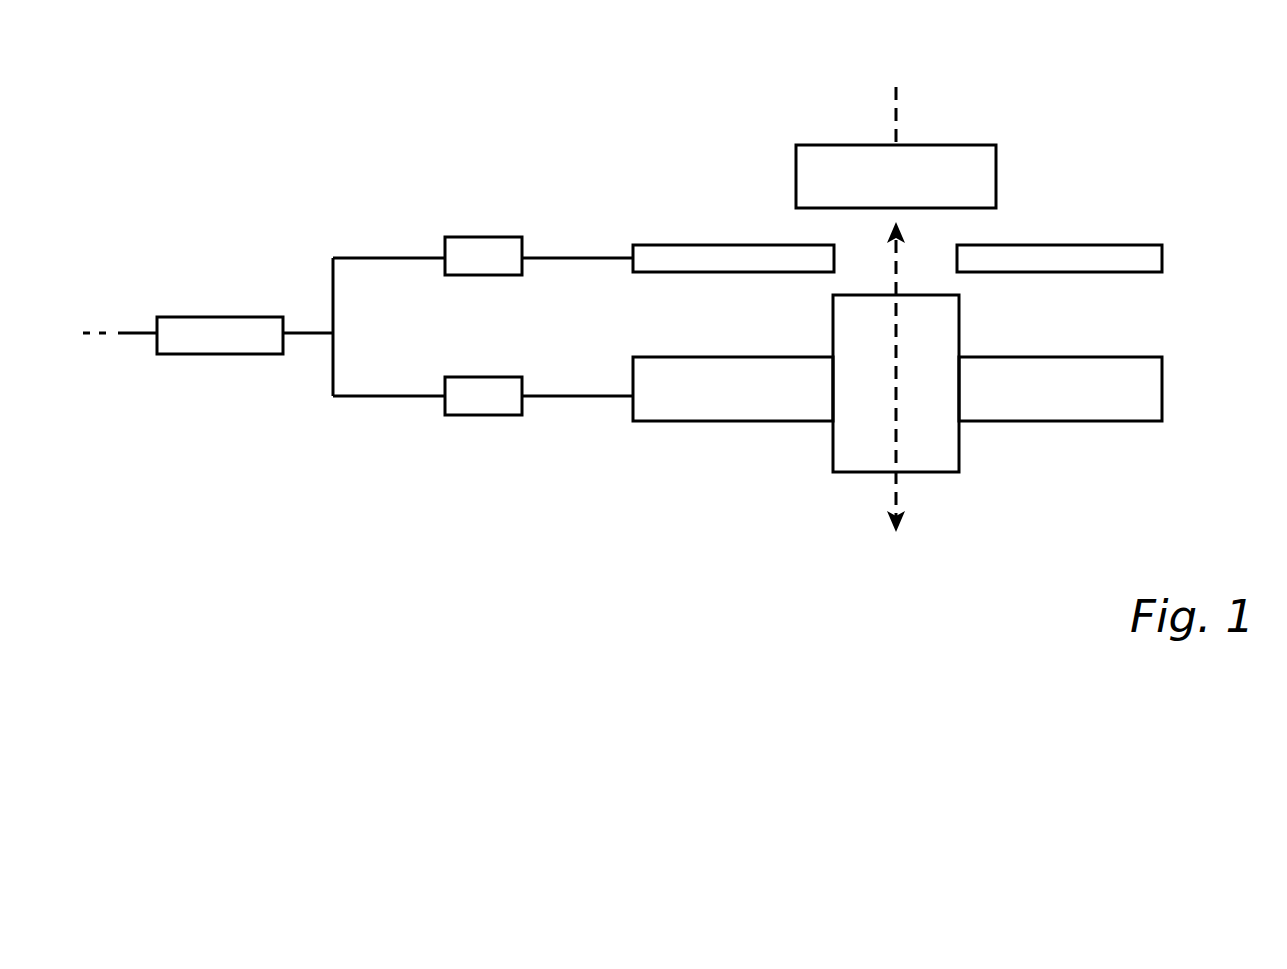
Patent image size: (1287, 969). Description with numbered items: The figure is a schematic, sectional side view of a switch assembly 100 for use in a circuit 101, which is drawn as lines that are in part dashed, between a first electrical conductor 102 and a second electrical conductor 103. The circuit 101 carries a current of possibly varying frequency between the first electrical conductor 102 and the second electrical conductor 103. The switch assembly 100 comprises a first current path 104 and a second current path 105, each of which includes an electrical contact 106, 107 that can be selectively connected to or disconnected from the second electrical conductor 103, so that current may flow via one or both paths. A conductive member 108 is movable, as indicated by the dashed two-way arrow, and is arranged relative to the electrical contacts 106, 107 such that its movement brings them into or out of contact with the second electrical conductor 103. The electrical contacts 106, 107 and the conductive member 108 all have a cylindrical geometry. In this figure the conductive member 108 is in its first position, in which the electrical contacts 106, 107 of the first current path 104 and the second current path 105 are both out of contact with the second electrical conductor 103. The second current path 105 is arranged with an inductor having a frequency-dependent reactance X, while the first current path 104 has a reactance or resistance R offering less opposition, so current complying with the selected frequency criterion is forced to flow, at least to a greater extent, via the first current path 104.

The switch assembly 100 is at (584, 210).
The circuit 101 is at (139, 347).
The first electrical conductor 102 is at (205, 316).
The second electrical conductor 103 is at (980, 143).
The first current path 104 is at (342, 242).
The second current path 105 is at (319, 412).
The electrical contact of the first current path 106 is at (718, 244).
The electrical contact of the second current path 107 is at (722, 423).
The conductive member 108 is at (845, 473).